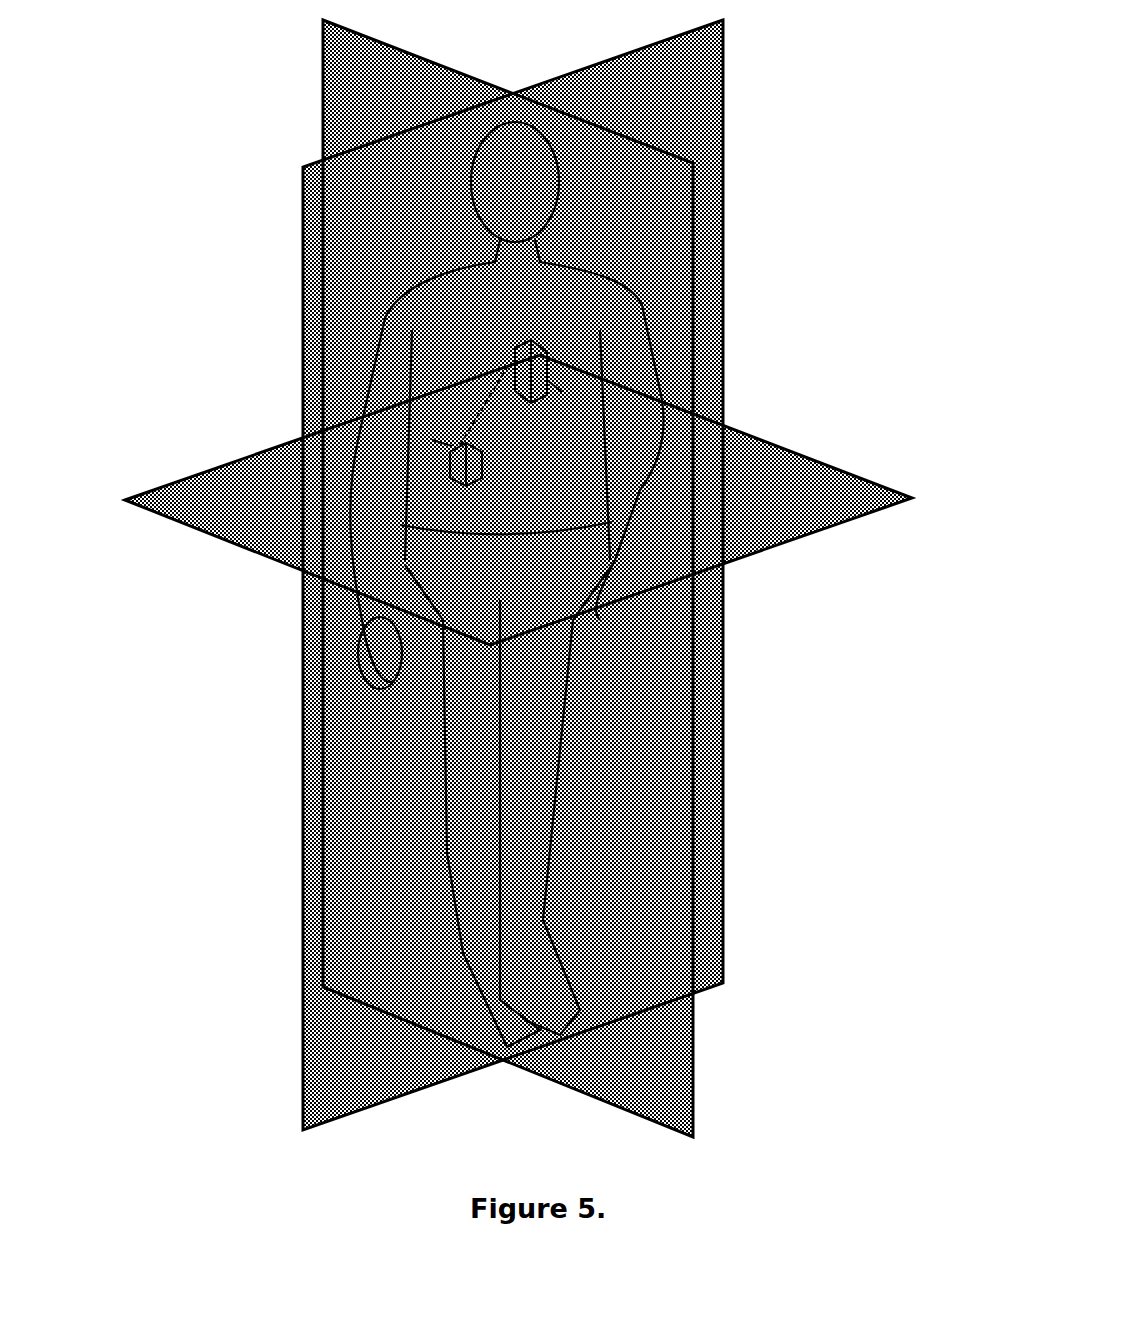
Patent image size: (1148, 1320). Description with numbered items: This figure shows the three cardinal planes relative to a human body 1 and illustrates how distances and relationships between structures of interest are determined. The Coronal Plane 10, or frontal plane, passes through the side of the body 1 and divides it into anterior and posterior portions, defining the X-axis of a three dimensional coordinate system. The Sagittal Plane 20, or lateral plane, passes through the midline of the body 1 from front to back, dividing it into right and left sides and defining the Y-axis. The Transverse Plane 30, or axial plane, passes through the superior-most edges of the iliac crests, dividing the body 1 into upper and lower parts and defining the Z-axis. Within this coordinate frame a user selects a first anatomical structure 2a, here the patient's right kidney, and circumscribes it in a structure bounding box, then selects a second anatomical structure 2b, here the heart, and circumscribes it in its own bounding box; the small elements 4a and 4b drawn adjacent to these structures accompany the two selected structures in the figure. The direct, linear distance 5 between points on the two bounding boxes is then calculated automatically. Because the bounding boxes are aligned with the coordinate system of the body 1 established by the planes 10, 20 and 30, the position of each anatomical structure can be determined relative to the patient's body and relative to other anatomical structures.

The body 1 is at (452, 665).
The first anatomical structure 2a is at (432, 468).
The second anatomical structure 2b is at (517, 373).
The first electrode 4a is at (428, 445).
The second electrode 4b is at (556, 392).
The direct, linear distance 5 is at (450, 393).
The Coronal Plane 10 is at (610, 108).
The Sagittal Plane 20 is at (325, 90).
The Transverse Plane 30 is at (740, 493).